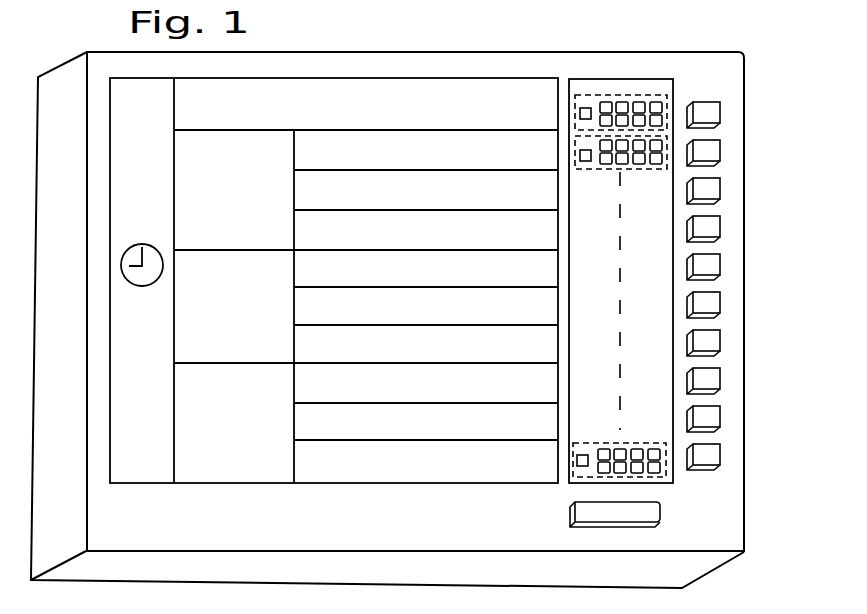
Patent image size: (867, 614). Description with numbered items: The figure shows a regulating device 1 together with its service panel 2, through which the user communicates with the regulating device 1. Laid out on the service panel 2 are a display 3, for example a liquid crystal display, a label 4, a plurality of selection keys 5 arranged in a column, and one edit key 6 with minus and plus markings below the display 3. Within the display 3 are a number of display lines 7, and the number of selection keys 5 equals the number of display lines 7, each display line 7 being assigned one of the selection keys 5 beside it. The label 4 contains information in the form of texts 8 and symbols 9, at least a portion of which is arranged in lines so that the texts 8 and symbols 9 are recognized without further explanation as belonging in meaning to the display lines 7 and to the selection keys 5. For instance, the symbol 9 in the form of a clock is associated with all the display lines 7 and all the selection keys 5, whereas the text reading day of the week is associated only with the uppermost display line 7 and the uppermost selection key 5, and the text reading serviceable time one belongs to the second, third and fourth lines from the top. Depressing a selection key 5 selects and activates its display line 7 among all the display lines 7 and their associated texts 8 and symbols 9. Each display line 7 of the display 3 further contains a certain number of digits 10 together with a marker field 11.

The regulating device 1 is at (70, 222).
The service panel 2 is at (728, 507).
The display 3 is at (617, 88).
The label 4 is at (135, 474).
The selection keys 5 is at (712, 113).
The edit key 6 is at (575, 511).
The display lines 7 is at (587, 100).
The texts 8 is at (183, 188).
The symbols 9 is at (147, 277).
The digits 10 is at (658, 148).
The marker field 11 is at (582, 155).